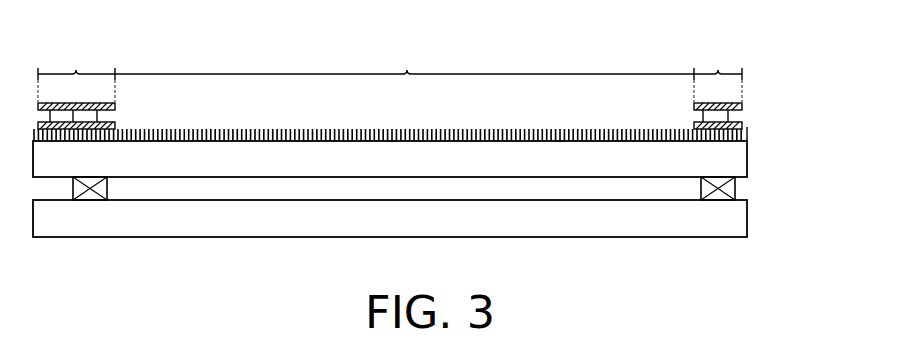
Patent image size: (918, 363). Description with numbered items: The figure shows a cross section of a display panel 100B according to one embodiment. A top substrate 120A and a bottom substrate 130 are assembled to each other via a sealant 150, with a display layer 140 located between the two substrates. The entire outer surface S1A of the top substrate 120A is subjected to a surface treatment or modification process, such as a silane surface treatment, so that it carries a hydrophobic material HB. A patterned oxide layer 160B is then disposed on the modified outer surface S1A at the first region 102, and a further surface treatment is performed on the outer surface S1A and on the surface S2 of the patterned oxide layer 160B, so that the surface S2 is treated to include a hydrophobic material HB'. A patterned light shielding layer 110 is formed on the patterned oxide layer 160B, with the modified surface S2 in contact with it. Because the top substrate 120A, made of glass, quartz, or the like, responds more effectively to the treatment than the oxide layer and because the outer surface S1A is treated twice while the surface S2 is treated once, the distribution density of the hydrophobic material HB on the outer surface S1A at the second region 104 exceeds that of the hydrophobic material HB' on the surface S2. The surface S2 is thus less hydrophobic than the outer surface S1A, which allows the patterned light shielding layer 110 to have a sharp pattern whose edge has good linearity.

The display panel 100B is at (829, 308).
The first region 102 is at (387, 86).
The second region 104 is at (404, 72).
The patterned light shielding layer 110 is at (742, 103).
The top substrate 120A is at (735, 155).
The bottom substrate 130 is at (737, 221).
The display layer 140 is at (662, 192).
The sealant 150 is at (735, 189).
The patterned oxide layer 160B is at (743, 129).
The hydrophobic material HB is at (419, 140).
The hydrophobic material HB' is at (768, 96).
The outer surface S1A is at (579, 152).
The surface S2 is at (697, 113).